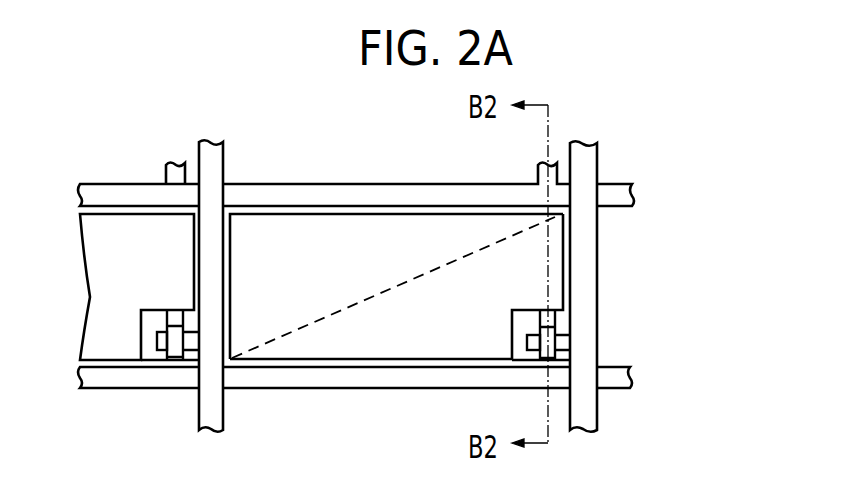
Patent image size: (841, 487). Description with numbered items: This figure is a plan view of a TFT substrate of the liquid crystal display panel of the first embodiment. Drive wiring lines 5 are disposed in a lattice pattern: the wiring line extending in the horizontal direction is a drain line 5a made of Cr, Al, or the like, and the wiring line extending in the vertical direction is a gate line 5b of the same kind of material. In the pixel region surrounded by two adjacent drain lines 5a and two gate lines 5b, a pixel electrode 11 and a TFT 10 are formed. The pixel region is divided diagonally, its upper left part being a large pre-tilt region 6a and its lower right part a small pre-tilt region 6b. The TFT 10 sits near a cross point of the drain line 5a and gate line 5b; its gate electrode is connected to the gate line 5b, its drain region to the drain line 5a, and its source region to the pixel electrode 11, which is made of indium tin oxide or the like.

The drive wiring lines 5 is at (696, 92).
The drain line 5a is at (612, 195).
The gate line 5b is at (580, 155).
The large pre-tilt region 6a is at (274, 286).
The small pre-tilt region 6b is at (422, 313).
The TFT 10 is at (572, 340).
The pixel electrode 11 is at (352, 360).